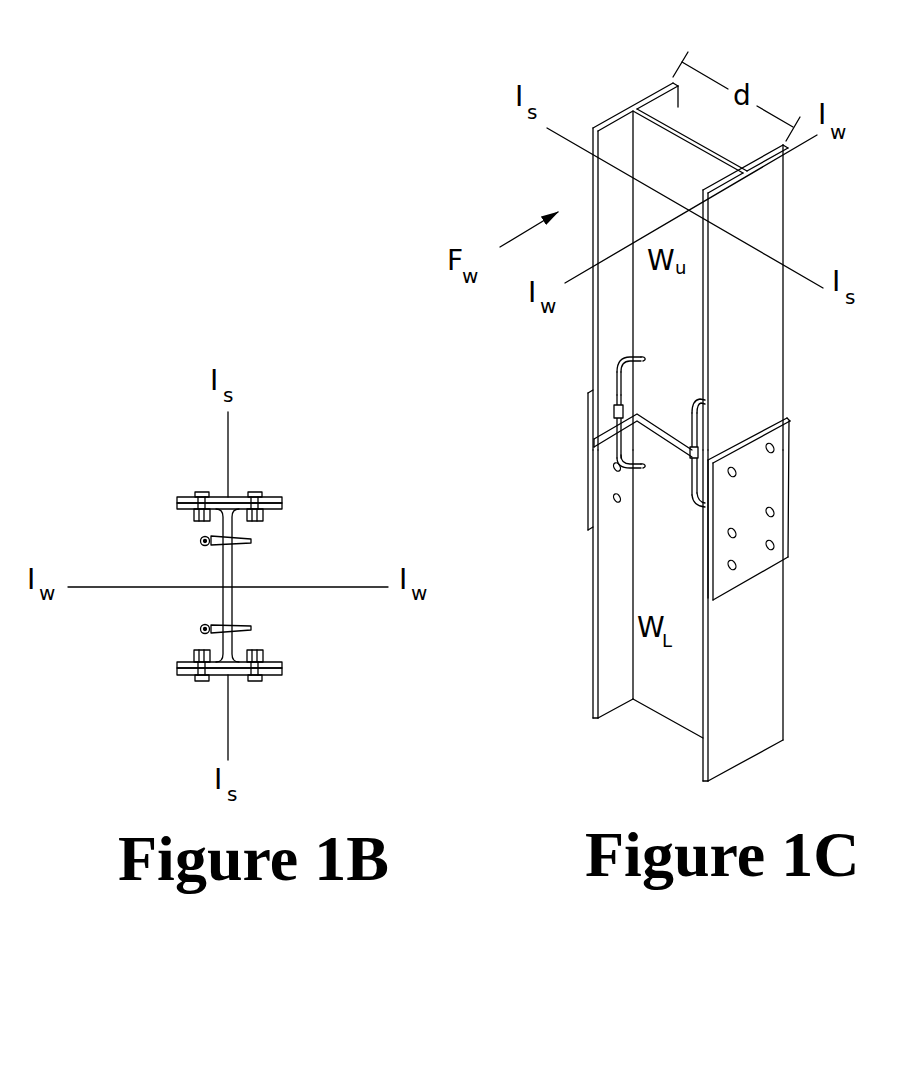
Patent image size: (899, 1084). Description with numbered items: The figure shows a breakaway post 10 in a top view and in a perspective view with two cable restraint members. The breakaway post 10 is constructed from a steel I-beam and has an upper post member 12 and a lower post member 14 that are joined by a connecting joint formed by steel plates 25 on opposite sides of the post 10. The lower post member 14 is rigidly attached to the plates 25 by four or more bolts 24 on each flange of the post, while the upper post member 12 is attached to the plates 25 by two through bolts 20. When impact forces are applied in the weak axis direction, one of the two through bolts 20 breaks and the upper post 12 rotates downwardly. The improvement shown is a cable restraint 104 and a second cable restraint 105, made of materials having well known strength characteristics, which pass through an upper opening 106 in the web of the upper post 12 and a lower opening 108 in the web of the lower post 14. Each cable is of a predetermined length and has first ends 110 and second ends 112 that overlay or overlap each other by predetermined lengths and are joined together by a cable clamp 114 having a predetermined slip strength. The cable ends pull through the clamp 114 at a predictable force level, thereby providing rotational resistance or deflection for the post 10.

In FIG. 1B, the breakaway post 10 is at (272, 580).
In FIG. 1B, the upper post member 12 is at (191, 585).
In FIG. 1C, the upper post member 12 is at (733, 266).
In FIG. 1C, the lower post member 14 is at (733, 615).
In FIG. 1B, the through bolts 20 is at (229, 587).
In FIG. 1C, the through bolts 20 is at (799, 466).
In FIG. 1C, the bolts 24 is at (818, 560).
In FIG. 1B, the steel plates 25 is at (235, 587).
In FIG. 1C, the steel plates 25 is at (693, 495).
In FIG. 1C, the cable restraint 104 is at (773, 439).
In FIG. 1B, the cable restraint 105 is at (179, 585).
In FIG. 1C, the cable restraint 105 is at (562, 414).
In FIG. 1C, the upper opening 106 is at (691, 328).
In FIG. 1C, the lower opening 108 is at (580, 506).
In FIG. 1C, the first ends 110 is at (598, 504).
In FIG. 1C, the second ends 112 is at (677, 368).
In FIG. 1C, the cable clamp 114 is at (561, 422).